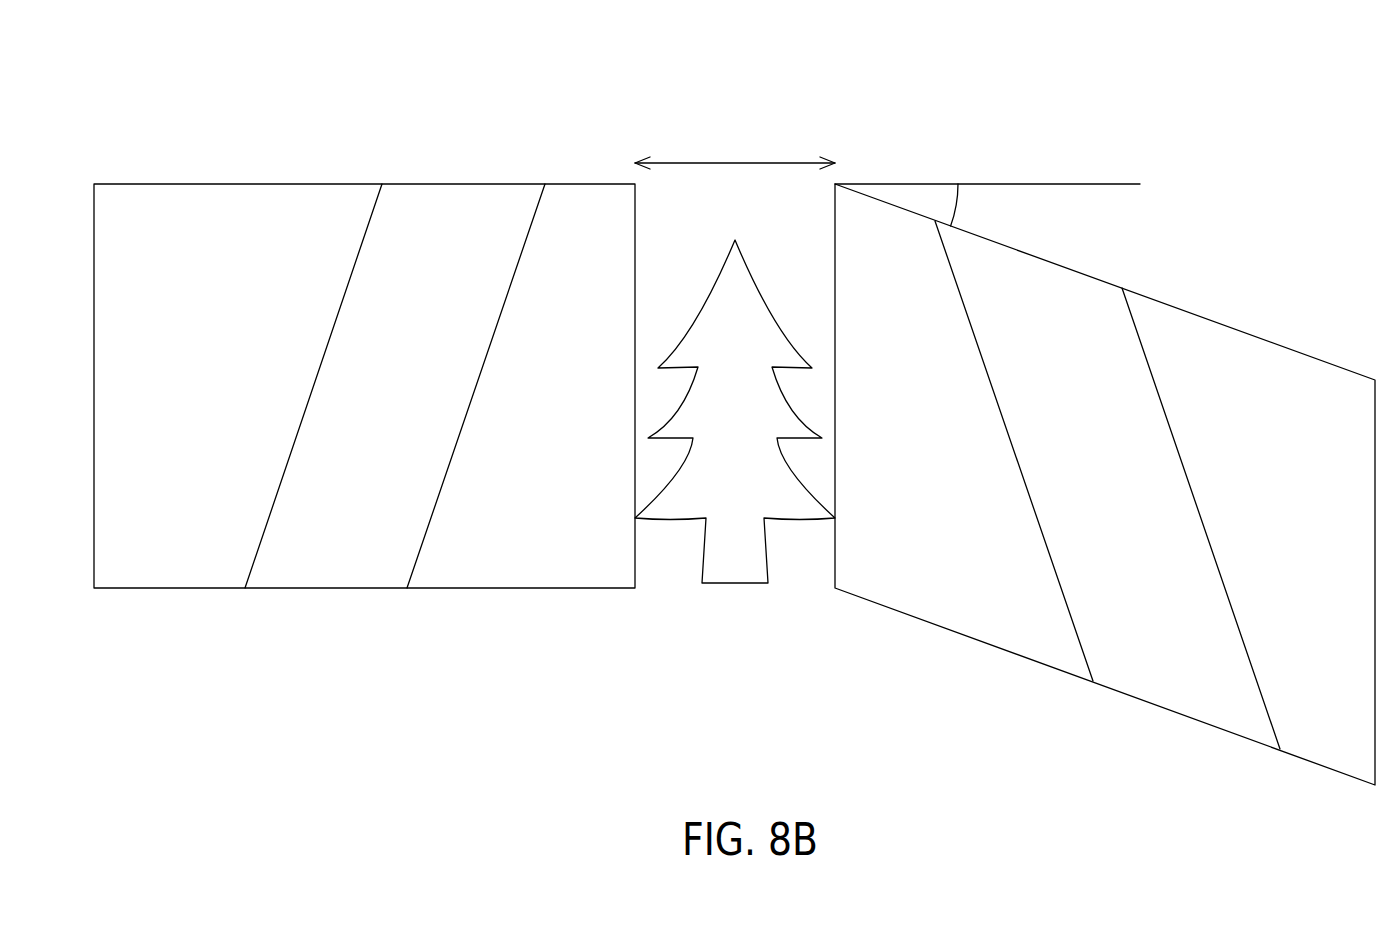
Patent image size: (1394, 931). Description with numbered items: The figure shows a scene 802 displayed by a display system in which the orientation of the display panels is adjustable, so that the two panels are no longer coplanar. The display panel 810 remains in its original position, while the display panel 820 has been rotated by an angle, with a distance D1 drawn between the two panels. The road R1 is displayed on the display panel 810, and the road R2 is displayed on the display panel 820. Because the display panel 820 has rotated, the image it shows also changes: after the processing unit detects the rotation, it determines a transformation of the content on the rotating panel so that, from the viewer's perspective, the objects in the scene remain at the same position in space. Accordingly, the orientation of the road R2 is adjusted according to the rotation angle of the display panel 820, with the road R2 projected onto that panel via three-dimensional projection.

The scene 802 is at (1375, 53).
The display panel 810 is at (272, 184).
The display panel 820 is at (1207, 318).
The road R1 is at (315, 377).
The road R2 is at (1203, 518).
The distance between panels D1 is at (735, 142).